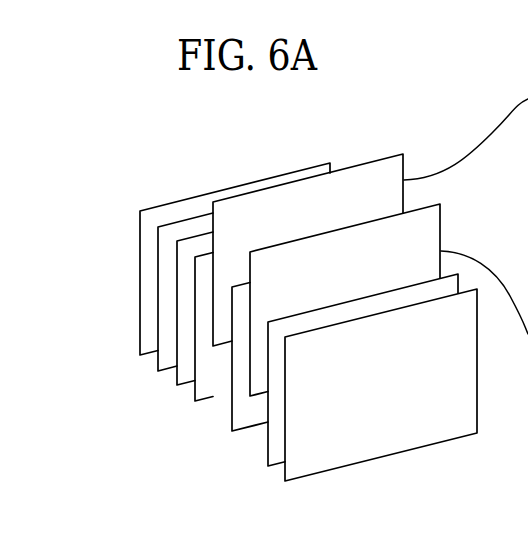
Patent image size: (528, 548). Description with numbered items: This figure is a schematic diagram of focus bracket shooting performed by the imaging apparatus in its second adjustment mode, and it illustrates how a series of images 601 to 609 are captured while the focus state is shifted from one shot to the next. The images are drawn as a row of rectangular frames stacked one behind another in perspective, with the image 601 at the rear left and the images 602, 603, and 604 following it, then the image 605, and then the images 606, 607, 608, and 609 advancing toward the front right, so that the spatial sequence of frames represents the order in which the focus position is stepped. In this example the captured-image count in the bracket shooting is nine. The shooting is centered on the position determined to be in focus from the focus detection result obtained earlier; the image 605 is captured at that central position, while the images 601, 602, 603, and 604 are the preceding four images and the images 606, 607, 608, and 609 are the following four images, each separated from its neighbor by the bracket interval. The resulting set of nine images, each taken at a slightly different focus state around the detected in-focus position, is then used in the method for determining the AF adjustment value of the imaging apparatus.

The image 601 is at (140, 229).
The image 602 is at (166, 267).
The image 603 is at (176, 307).
The image 604 is at (197, 351).
The image 605 is at (212, 208).
The image 606 is at (230, 362).
The image 607 is at (248, 378).
The image 608 is at (267, 403).
The image 609 is at (285, 433).